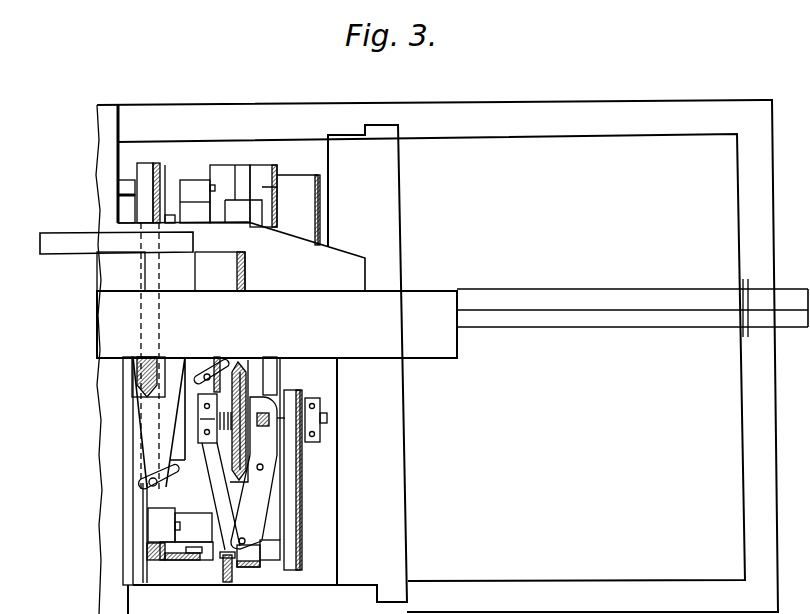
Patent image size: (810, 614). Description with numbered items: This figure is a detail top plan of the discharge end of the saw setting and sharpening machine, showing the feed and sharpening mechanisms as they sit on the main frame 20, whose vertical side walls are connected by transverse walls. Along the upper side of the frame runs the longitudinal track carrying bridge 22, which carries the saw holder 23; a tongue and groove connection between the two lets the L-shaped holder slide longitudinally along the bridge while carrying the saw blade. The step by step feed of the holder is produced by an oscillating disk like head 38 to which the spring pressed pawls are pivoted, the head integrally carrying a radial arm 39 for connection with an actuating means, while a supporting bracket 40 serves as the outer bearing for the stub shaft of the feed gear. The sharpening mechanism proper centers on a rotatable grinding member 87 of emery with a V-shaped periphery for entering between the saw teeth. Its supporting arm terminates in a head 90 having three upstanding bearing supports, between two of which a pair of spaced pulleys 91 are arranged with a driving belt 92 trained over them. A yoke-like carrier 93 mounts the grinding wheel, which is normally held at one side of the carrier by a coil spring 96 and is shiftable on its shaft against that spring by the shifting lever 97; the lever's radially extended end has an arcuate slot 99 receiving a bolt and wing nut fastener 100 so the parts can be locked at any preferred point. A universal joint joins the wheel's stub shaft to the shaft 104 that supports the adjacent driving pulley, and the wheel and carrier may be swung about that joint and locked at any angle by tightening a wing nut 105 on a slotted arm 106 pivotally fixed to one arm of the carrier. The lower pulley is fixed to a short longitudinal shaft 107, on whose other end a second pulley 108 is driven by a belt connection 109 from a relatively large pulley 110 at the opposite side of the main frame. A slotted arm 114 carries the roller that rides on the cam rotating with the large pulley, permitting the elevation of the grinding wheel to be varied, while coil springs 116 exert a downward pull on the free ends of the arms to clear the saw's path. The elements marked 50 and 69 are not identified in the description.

The main frame 20 is at (572, 134).
The track carrying bridge 22 is at (632, 308).
The saw holder 23 is at (277, 324).
The disk like head 38 is at (222, 262).
The radial arm 39 is at (139, 356).
The supporting bracket 40 is at (241, 256).
The bar 50 is at (50, 232).
The block 69 is at (298, 210).
The grinding member 87 is at (124, 385).
The head 90 is at (176, 175).
The pulleys 91 is at (303, 393).
The driving belt 92 is at (295, 476).
The yoke-like carrier 93 is at (142, 410).
The coil spring 96 is at (260, 401).
The shifting lever 97 is at (133, 418).
The arcuate slot 99 is at (165, 483).
The bolt and wing nut fastener 100 is at (140, 484).
The shaft 104 is at (328, 418).
The wing nut 105 is at (212, 368).
The slotted arm 106 is at (243, 366).
The short longitudinal shaft 107 is at (125, 188).
The second pulley 108 is at (137, 205).
The belt connection 109 is at (250, 173).
The large pulley 110 is at (226, 170).
The slotted arm 114 is at (157, 531).
The coil springs 116 is at (211, 567).